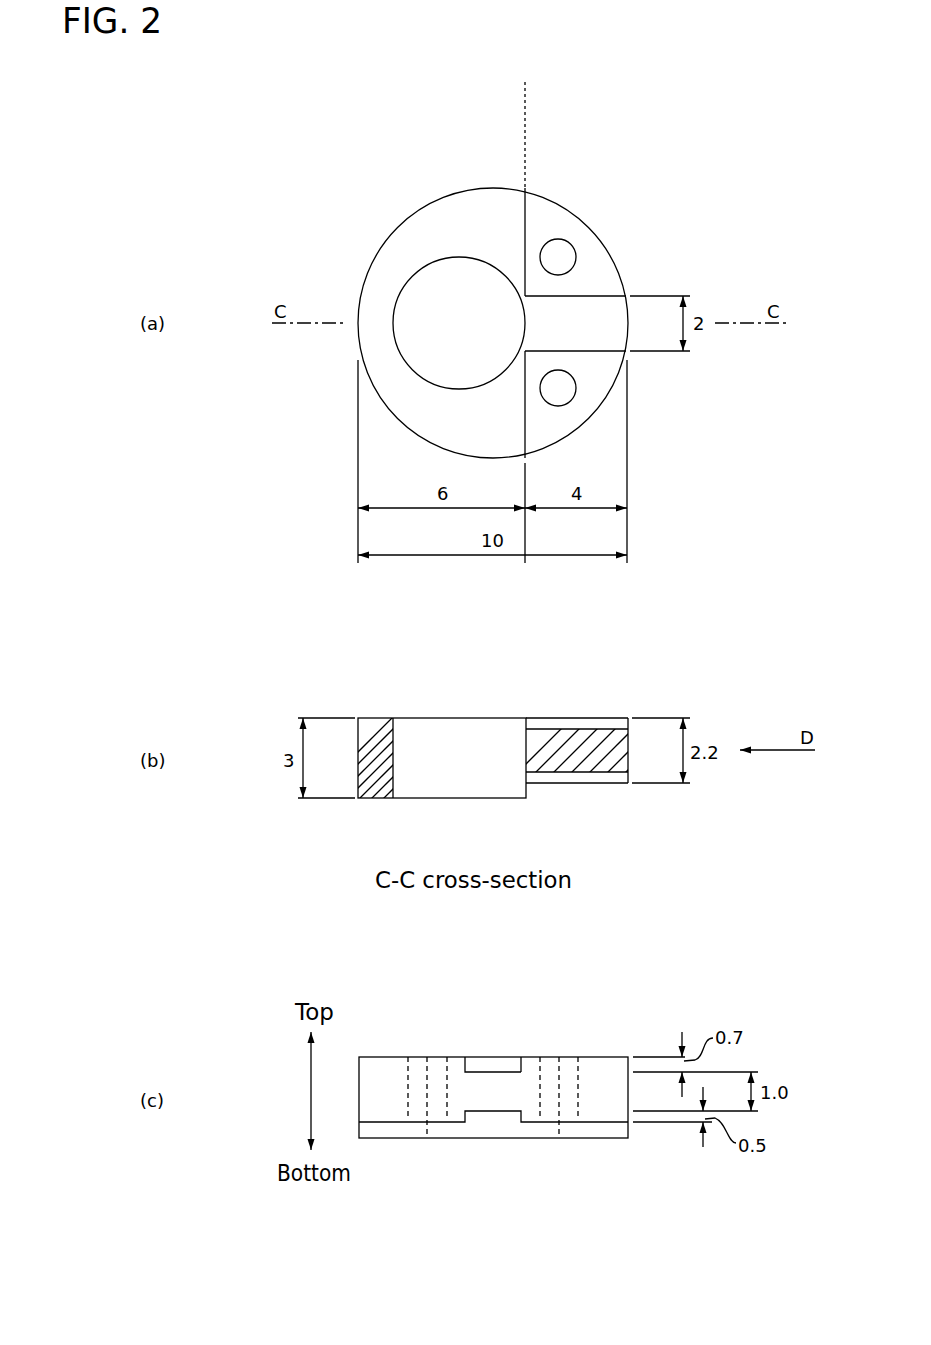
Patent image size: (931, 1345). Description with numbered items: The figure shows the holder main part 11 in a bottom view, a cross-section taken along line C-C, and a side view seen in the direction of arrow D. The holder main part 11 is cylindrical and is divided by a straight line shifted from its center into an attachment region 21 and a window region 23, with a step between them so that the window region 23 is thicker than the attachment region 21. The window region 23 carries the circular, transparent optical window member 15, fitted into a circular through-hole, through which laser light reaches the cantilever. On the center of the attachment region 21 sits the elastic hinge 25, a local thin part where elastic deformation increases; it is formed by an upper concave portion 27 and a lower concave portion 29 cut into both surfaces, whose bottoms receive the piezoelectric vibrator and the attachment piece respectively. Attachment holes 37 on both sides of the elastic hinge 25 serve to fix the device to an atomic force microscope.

The holder main part 11 is at (597, 162).
The optical window member 15 is at (481, 261).
The attachment region 21 is at (526, 95).
The window region 23 is at (525, 95).
The elastic hinge 25 is at (567, 308).
The upper concave portion 27 is at (597, 732).
The lower concave portion 29 is at (604, 299).
The attachment holes 37 is at (566, 238).